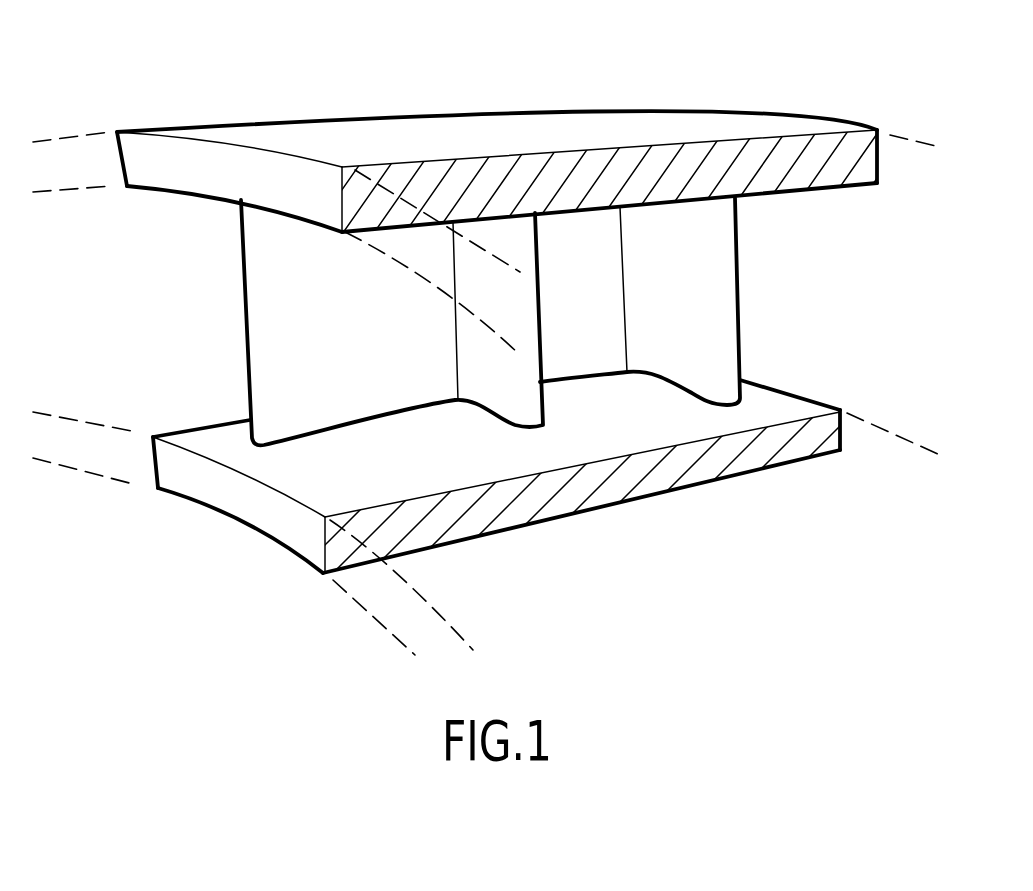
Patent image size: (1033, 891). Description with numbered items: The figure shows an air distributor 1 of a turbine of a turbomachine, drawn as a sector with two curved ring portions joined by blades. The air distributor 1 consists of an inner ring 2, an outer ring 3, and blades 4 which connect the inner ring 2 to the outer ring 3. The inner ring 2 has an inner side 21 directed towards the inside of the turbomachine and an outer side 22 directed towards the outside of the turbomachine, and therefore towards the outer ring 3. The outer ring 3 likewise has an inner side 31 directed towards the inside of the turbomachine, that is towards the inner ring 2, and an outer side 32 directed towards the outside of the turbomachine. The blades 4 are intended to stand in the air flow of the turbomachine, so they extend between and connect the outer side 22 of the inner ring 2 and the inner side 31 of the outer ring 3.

The air distributor 1 is at (96, 75).
The inner ring 2 is at (608, 512).
The inner side 21 is at (678, 493).
The outer side 22 is at (768, 405).
The outer ring 3 is at (703, 102).
The inner side 31 is at (775, 197).
The outer side 32 is at (340, 137).
The blades 4 is at (233, 293).